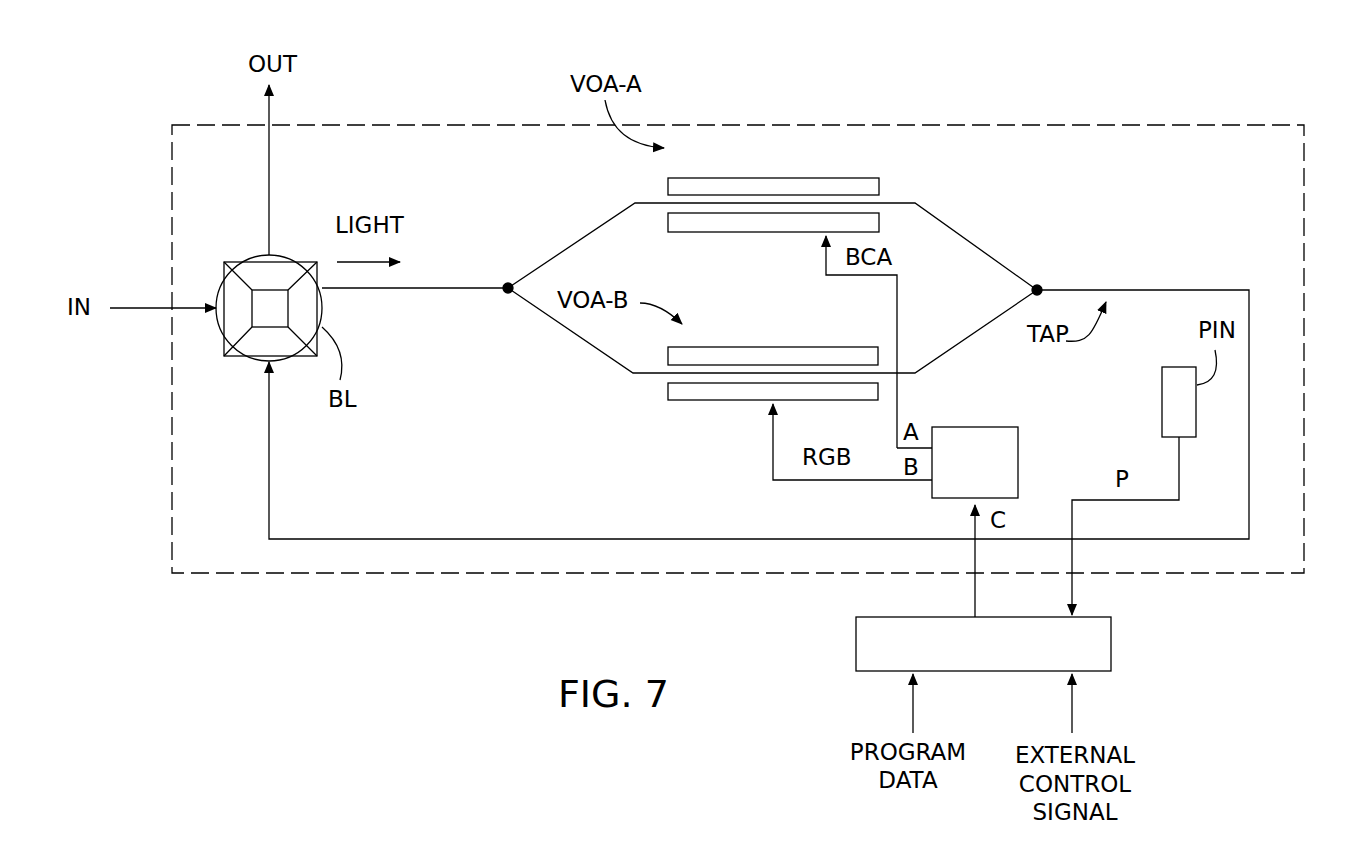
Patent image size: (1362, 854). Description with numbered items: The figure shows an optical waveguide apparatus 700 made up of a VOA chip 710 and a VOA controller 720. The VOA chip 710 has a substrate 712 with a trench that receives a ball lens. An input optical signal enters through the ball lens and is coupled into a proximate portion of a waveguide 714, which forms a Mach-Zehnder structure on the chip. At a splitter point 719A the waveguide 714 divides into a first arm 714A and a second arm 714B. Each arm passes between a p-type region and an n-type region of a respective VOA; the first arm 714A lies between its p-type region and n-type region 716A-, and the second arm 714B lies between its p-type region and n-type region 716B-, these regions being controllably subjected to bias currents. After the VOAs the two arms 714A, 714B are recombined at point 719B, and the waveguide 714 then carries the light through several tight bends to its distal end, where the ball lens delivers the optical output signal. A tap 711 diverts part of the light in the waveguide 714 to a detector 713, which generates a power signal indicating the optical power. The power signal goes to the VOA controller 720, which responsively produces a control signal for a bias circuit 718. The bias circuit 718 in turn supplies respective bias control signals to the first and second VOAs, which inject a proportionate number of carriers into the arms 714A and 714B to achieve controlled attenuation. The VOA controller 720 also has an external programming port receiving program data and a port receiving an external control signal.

The optical waveguide apparatus 700 is at (378, 658).
The VOA chip 710 is at (1305, 180).
The tap 711 is at (1162, 385).
The substrate 712 is at (1228, 193).
The detector 713 is at (1160, 425).
The waveguide 714 is at (393, 290).
The first arm 714A is at (643, 203).
The second arm 714B is at (560, 325).
The n-type region 716A- is at (738, 232).
The n-type region 716B- is at (738, 400).
The bias circuit 718 is at (1020, 447).
The split point 719A is at (508, 284).
The coupling point 719B is at (1041, 288).
The VOA controller 720 is at (878, 672).